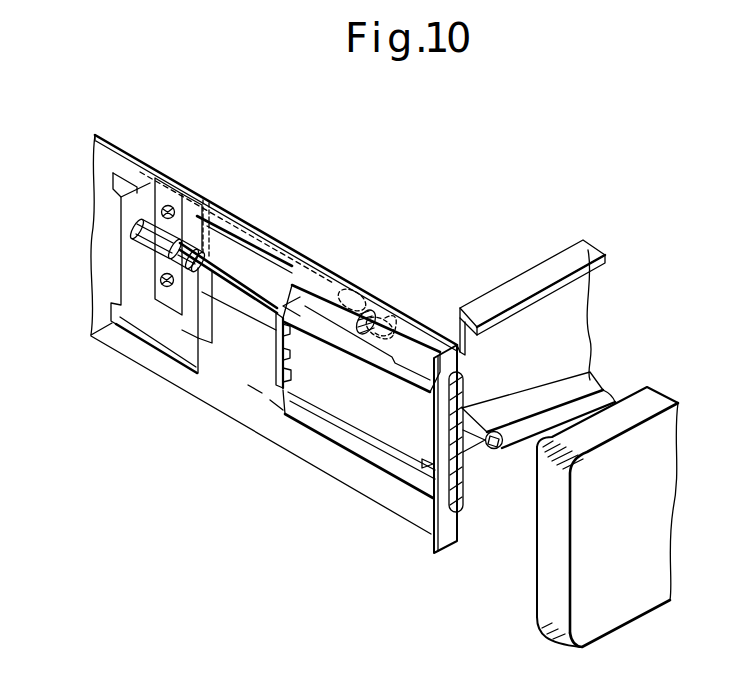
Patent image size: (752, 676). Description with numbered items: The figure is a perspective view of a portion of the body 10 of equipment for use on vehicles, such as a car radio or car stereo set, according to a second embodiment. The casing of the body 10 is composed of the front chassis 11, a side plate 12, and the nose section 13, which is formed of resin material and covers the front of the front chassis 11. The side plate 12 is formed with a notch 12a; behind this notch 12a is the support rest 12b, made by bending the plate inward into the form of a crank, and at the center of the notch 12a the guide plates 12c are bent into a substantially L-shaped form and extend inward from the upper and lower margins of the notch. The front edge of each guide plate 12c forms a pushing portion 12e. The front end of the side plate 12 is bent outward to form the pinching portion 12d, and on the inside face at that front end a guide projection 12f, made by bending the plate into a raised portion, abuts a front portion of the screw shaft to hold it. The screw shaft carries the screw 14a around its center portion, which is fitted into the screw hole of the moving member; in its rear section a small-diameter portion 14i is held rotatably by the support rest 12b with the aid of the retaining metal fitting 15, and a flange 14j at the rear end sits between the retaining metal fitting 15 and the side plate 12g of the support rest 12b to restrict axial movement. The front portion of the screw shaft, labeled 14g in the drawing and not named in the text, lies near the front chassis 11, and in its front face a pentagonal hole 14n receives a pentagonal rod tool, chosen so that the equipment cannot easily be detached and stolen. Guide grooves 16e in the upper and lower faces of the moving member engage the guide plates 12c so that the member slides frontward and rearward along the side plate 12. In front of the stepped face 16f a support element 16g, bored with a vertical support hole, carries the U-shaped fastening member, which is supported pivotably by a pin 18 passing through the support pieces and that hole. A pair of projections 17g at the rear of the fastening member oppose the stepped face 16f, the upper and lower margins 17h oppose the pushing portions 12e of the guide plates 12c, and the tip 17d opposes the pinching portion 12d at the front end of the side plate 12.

The body 10 is at (383, 236).
The front chassis 11 is at (525, 280).
The side plate 12 is at (114, 141).
The notch 12a is at (313, 413).
The support rest 12b is at (130, 345).
The guide plates 12c is at (228, 258).
The pinching portion 12d is at (427, 522).
The pushing portion 12e is at (293, 287).
The guide projection 12f is at (462, 472).
The side plate of the support rest 12g is at (125, 290).
The nose section 13 is at (550, 560).
The screw 14a is at (167, 302).
The hinge pin 14g is at (478, 425).
The small-diameter portion 14i is at (200, 200).
The flange 14j is at (135, 229).
The pentagonal hole 14n is at (482, 448).
The retaining metal fitting 15 is at (140, 254).
The guide grooves 16e is at (282, 264).
The stepped face 16f is at (273, 322).
The support element 16g is at (390, 313).
The tip 17d is at (424, 448).
The projections 17g is at (252, 395).
The upper and lower margins 17h is at (308, 297).
The pin 18 is at (367, 293).